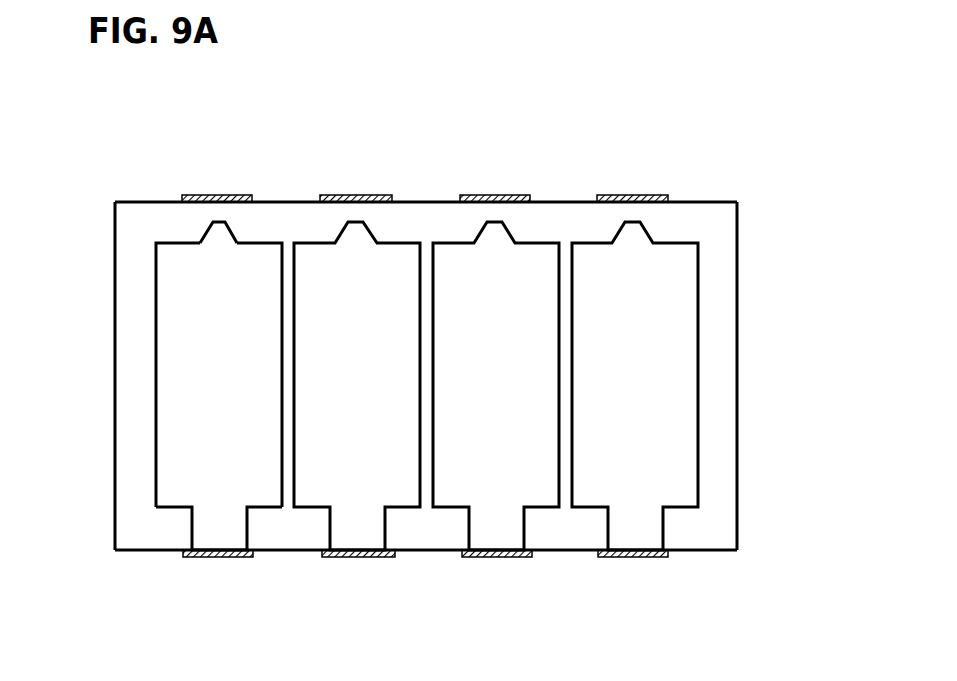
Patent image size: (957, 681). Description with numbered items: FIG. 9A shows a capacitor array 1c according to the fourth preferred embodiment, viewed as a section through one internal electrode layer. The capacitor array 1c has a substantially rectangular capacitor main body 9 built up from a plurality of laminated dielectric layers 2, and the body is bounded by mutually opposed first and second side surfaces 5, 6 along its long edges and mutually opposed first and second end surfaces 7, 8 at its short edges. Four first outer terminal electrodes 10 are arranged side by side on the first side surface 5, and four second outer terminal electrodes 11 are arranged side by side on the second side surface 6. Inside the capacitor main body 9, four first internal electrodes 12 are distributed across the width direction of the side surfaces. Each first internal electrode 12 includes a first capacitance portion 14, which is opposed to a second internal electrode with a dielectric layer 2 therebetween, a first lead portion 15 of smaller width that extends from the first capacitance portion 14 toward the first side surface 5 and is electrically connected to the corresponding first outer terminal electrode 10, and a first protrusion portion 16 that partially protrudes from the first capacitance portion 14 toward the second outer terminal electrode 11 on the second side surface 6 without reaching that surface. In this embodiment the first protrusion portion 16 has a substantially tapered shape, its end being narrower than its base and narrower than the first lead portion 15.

The capacitor array 1c is at (131, 102).
The dielectric layer 2 is at (737, 332).
The first side surface 5 is at (417, 557).
The second side surface 6 is at (427, 202).
The first end surface 7 is at (115, 262).
The second end surface 8 is at (737, 398).
The capacitor main body 9 is at (748, 203).
The first outer terminal electrode 10 is at (353, 557).
The second outer terminal electrode 11 is at (235, 195).
The first internal electrode 12 is at (146, 398).
The first capacitance portion 14 is at (170, 325).
The first lead portion 15 is at (213, 529).
The first protrusion portion 16 is at (212, 236).